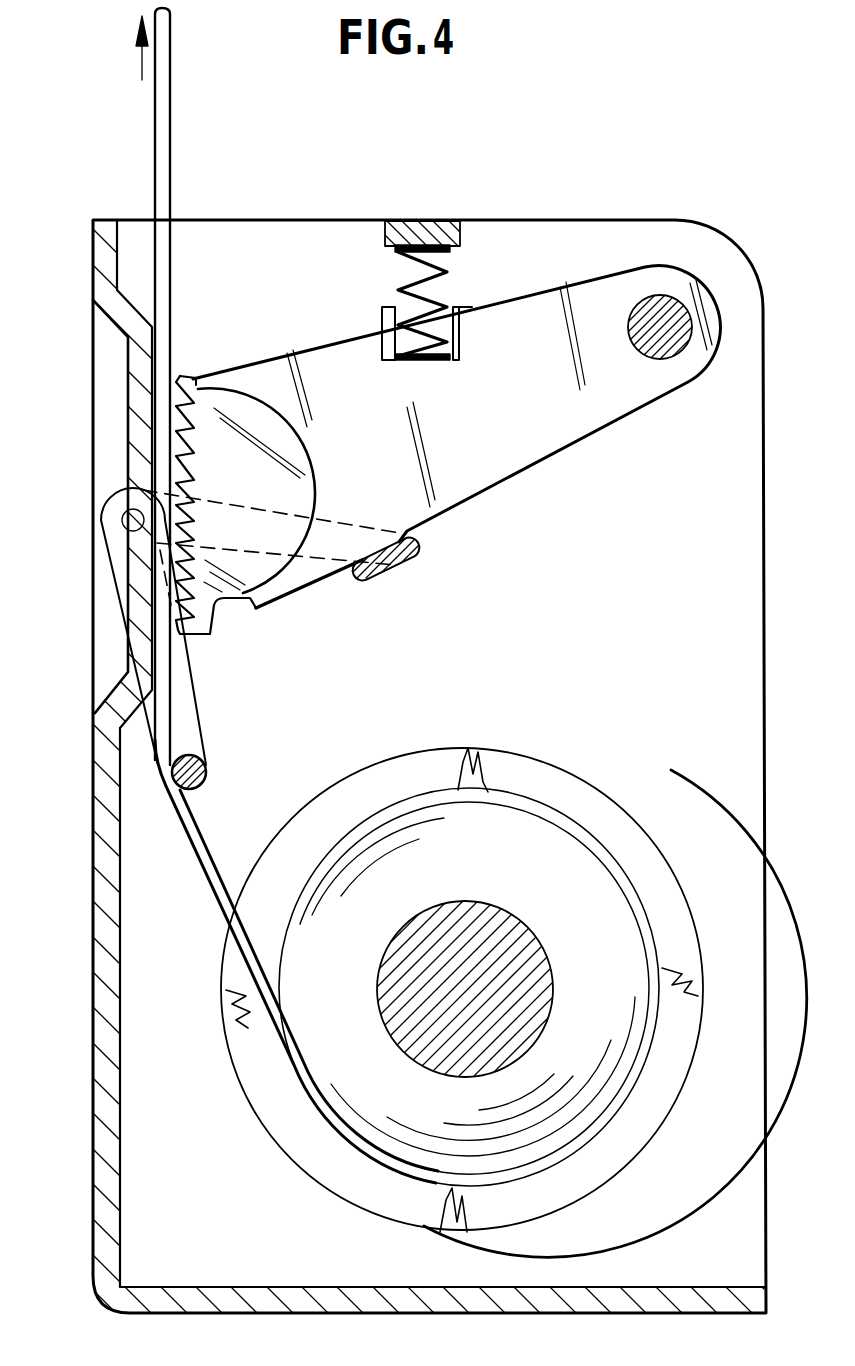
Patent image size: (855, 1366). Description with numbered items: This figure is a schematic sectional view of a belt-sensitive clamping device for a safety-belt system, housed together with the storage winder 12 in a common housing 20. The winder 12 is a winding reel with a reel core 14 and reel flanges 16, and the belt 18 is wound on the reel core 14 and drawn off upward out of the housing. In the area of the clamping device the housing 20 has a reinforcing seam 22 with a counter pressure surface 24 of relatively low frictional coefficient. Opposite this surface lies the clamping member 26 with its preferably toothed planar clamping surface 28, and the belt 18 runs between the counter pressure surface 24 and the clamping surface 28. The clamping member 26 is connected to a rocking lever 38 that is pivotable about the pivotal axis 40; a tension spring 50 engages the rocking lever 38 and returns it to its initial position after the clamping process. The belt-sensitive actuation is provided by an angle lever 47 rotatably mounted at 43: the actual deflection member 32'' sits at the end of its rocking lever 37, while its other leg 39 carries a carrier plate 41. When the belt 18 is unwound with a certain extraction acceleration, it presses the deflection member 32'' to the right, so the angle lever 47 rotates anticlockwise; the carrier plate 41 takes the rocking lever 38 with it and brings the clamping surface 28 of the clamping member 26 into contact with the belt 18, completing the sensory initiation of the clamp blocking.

The storage winder 12 is at (543, 752).
The reel core 14 is at (502, 924).
The reel flanges 16 is at (276, 1130).
The belt 18 is at (197, 850).
The housing 20 is at (93, 990).
The reinforcing seam 22 is at (140, 383).
The counter pressure surface 24 is at (147, 428).
The clamping member 26 is at (290, 480).
The clamping surface 28 is at (190, 453).
The deflection member 32'' is at (231, 771).
The rocking lever 37 is at (195, 735).
The rocking lever 38 is at (520, 453).
The other leg 39 is at (340, 548).
The pivotal axis 40 is at (660, 360).
The carrier plate 41 is at (388, 572).
The rotatable mounting 43 is at (122, 520).
The angle lever 47 is at (113, 583).
The tension spring 50 is at (447, 274).